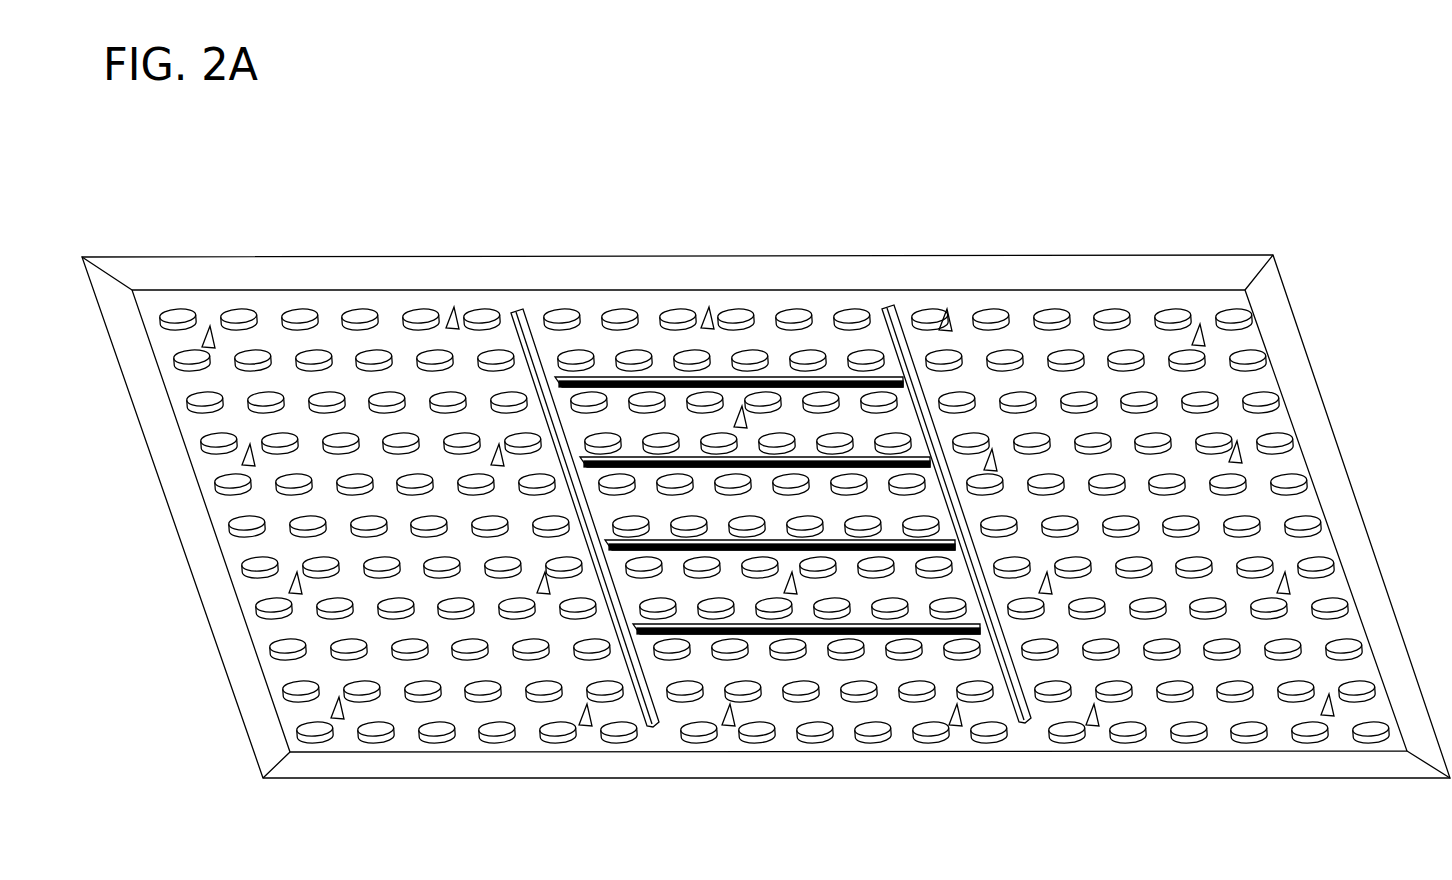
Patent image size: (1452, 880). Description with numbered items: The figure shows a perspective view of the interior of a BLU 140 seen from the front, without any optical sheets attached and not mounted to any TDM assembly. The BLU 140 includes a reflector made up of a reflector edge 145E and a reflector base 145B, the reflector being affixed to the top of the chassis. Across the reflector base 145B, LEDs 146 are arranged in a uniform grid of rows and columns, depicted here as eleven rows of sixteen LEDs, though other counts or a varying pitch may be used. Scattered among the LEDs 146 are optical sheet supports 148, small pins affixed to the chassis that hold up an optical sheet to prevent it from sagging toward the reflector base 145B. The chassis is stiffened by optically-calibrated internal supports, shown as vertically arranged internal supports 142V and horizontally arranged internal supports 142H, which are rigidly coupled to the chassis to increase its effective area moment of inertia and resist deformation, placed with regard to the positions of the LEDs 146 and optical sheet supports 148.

The BLU 140 is at (1127, 187).
The vertically arranged internal supports 142V is at (517, 310).
The horizontally arranged internal supports 142H is at (840, 376).
The reflector edge 145E is at (250, 273).
The reflector base 145B is at (323, 311).
The LEDs 146 is at (178, 313).
The optical sheet supports 148 is at (452, 306).